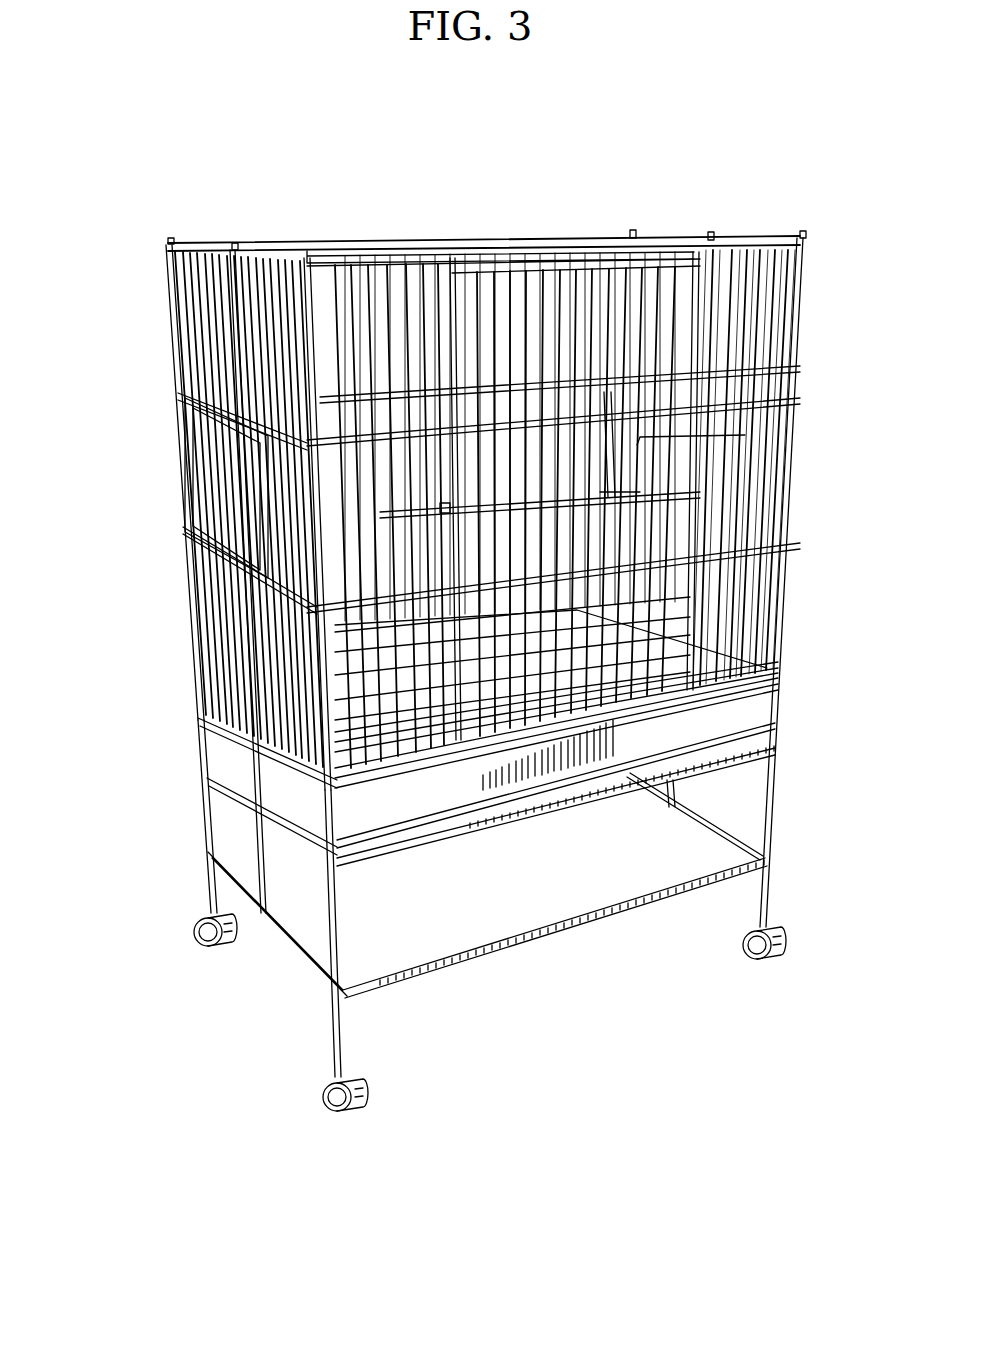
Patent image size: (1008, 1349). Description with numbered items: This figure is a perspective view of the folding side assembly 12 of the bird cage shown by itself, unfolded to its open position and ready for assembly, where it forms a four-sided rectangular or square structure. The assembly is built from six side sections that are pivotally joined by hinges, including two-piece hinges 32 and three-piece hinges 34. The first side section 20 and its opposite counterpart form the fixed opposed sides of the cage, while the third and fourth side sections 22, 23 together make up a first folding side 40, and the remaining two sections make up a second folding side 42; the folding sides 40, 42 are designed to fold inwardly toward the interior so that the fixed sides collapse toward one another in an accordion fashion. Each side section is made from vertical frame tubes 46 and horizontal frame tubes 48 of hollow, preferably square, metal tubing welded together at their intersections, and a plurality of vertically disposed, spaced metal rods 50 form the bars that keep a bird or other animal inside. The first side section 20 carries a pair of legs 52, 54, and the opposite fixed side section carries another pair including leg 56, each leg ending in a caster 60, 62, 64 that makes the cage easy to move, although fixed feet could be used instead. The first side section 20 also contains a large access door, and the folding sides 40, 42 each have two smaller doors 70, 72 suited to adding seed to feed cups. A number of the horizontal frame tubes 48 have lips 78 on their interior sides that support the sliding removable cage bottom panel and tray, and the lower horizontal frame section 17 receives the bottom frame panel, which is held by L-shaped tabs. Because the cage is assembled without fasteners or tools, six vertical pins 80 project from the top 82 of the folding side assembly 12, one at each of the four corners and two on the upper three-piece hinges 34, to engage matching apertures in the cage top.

The folding side assembly 12 is at (790, 168).
The lower horizontal frame section 17 is at (510, 950).
The first side section 20 is at (735, 338).
The third side section 22 is at (190, 357).
The fourth side section 23 is at (290, 640).
The two-piece hinges 32 is at (215, 520).
The three-piece hinges 34 is at (190, 407).
The first folding side 40 is at (142, 317).
The second folding side 42 is at (732, 308).
The vertical frame tubes 46 is at (790, 507).
The horizontal frame tubes 48 is at (760, 556).
The metal rods 50 is at (760, 587).
The leg 52 is at (340, 1035).
The leg 54 is at (768, 890).
The leg 56 is at (208, 870).
The caster 60 is at (340, 1105).
The caster 62 is at (757, 955).
The caster 64 is at (203, 945).
The smaller door 70 is at (205, 470).
The smaller door 72 is at (285, 578).
The lips 78 is at (740, 645).
The vertical pins 80 is at (237, 250).
The top of the folding side assembly 82 is at (535, 240).